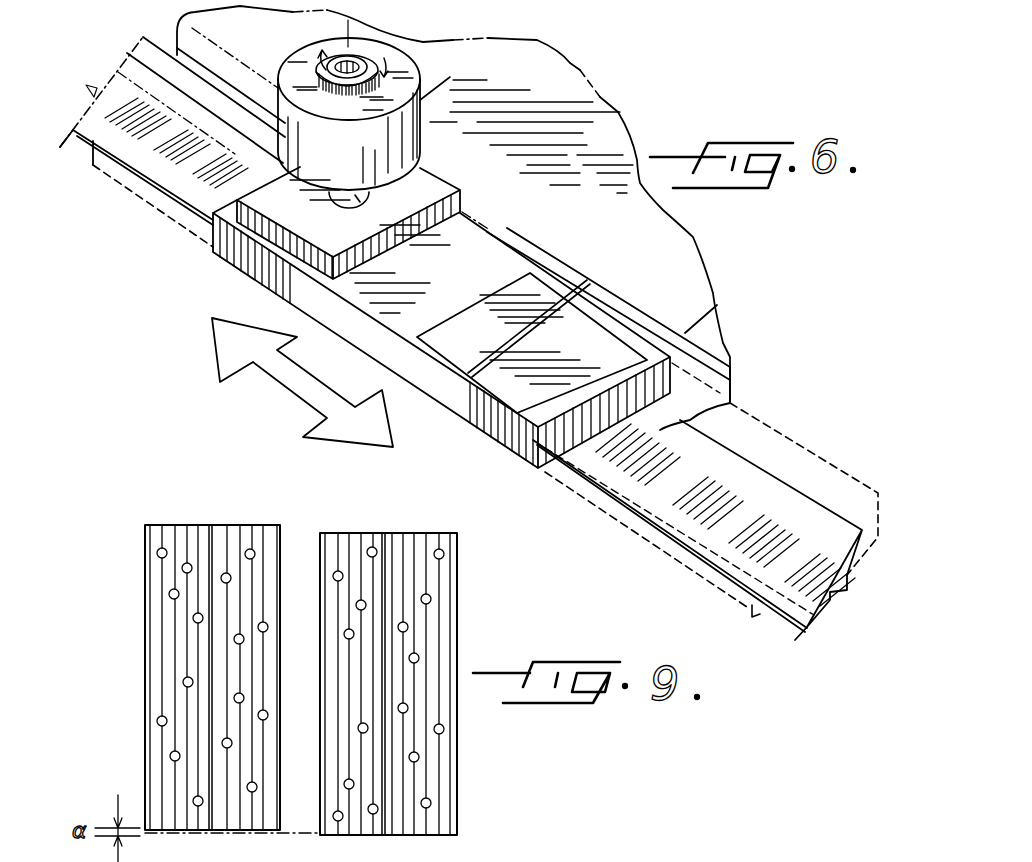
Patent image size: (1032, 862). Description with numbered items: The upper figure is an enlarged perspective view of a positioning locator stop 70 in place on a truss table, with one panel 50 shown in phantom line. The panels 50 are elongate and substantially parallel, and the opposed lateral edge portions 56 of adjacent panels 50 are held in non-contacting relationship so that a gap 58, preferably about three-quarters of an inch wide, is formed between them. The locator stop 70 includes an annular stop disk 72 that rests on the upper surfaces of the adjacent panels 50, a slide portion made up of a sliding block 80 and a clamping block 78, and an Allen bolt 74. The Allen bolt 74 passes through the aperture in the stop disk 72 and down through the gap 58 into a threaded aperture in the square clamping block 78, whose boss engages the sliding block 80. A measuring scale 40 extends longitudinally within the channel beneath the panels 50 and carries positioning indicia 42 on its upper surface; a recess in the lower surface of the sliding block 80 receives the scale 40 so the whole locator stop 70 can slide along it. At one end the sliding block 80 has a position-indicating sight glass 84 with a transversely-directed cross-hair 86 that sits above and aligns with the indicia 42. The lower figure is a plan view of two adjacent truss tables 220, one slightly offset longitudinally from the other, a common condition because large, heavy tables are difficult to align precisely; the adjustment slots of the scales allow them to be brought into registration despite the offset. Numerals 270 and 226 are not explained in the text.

In FIG. 6, the measuring scale 40 is at (707, 457).
In FIG. 6, the positioning indicia 42 is at (755, 513).
In FIG. 6, the panel 50 is at (610, 127).
In FIG. 6, the lateral edge portion 56 is at (720, 305).
In FIG. 6, the gap 58 is at (727, 370).
In FIG. 6, the positioning locator stop 70 is at (452, 141).
In FIG. 6, the stop disk 72 is at (420, 100).
In FIG. 6, the Allen bolt 74 is at (327, 67).
In FIG. 6, the clamping block 78 is at (445, 212).
In FIG. 6, the sliding block 80 is at (248, 260).
In FIG. 6, the sight glass 84 is at (578, 347).
In FIG. 6, the cross-hair 86 is at (533, 345).
In FIG. 9, the truss table 220 is at (124, 580).
In FIG. 9, the holes 270 is at (172, 680).
In FIG. 9, the holes 226 is at (180, 792).